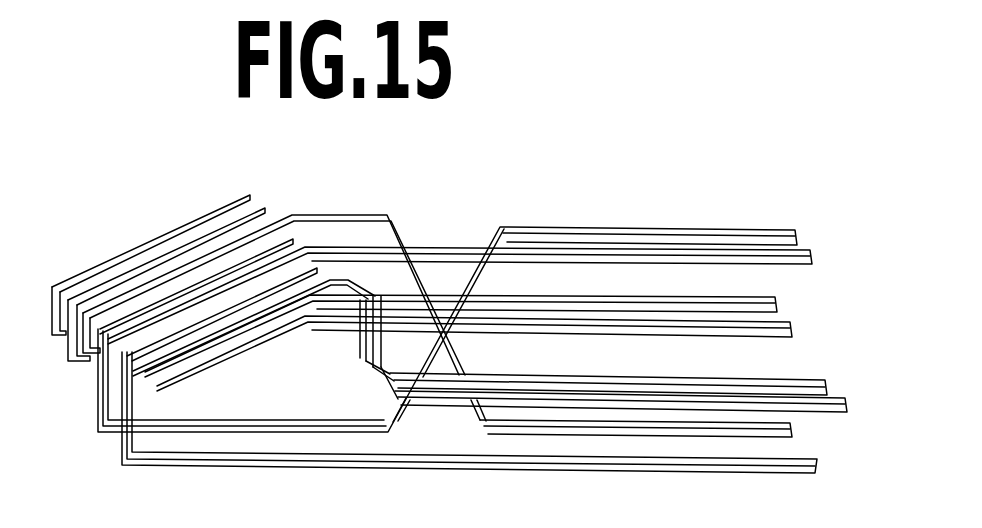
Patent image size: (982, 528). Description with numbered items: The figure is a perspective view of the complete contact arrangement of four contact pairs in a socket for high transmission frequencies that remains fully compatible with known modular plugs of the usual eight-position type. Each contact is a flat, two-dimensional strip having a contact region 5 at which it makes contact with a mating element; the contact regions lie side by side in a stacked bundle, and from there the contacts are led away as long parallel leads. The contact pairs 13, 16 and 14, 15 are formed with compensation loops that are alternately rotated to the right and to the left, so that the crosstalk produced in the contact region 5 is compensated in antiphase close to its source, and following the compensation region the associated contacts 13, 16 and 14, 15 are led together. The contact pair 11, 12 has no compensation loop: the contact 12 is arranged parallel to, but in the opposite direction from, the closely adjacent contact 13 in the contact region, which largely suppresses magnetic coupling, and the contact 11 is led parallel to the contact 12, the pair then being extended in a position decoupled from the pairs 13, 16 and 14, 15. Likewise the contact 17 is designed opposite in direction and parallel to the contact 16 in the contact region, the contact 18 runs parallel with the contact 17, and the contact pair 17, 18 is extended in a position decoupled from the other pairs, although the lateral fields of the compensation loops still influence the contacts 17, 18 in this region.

The contact region 5 is at (128, 228).
The contact 11 is at (847, 402).
The contact 12 is at (826, 383).
The contact 13 is at (817, 465).
The contact 14 is at (812, 258).
The contact 15 is at (796, 235).
The contact 16 is at (791, 430).
The contact 17 is at (792, 326).
The contact 18 is at (778, 303).